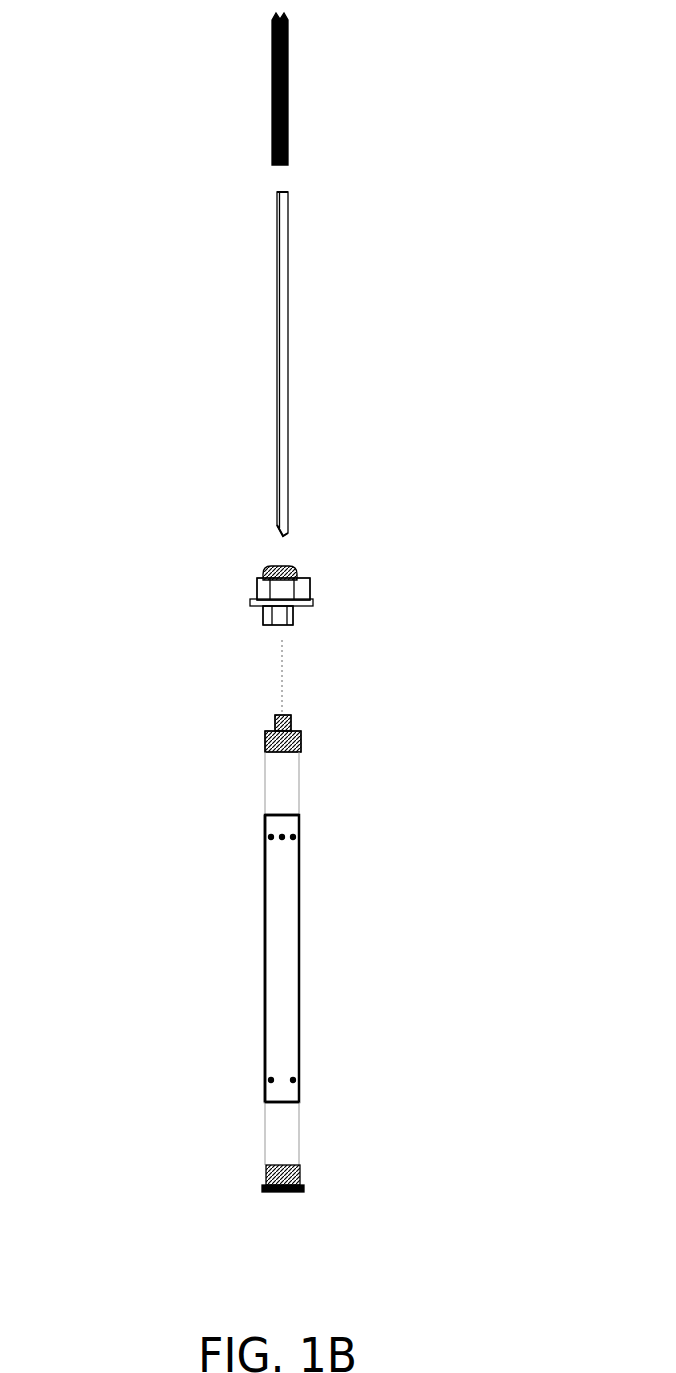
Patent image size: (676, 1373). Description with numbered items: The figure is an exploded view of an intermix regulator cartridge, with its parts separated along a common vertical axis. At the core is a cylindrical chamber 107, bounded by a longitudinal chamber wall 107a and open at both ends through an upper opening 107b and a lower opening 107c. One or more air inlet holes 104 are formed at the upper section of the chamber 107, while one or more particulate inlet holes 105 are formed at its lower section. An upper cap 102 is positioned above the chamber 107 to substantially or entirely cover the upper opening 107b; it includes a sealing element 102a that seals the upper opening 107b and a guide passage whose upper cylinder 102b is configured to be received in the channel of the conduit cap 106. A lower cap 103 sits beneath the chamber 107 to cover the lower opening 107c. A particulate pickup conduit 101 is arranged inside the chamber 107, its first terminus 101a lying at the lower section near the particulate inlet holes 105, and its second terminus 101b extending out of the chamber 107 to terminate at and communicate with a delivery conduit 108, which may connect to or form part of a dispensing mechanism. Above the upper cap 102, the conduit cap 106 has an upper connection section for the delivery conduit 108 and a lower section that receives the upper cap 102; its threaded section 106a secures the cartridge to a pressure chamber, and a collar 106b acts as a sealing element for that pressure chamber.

The particulate pickup conduit 101 is at (297, 310).
The first terminus 101a is at (290, 533).
The second terminus 101b is at (276, 192).
The upper cap 102 is at (300, 727).
The sealing element 102a is at (302, 745).
The upper cylinder 102b is at (270, 722).
The lower cap 103 is at (312, 1188).
The air inlet holes 104 is at (265, 836).
The particulate inlet holes 105 is at (265, 1080).
The conduit cap 106 is at (327, 583).
The threaded section 106a is at (302, 622).
The collar 106b is at (252, 598).
The chamber 107 is at (320, 977).
The longitudinal chamber wall 107a is at (265, 955).
The upper opening 107b is at (371, 802).
The lower opening 107c is at (371, 1122).
The delivery conduit 108 is at (302, 100).